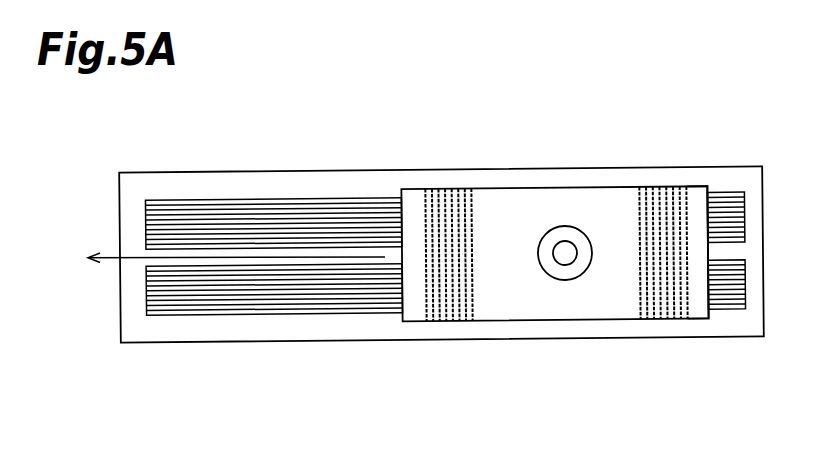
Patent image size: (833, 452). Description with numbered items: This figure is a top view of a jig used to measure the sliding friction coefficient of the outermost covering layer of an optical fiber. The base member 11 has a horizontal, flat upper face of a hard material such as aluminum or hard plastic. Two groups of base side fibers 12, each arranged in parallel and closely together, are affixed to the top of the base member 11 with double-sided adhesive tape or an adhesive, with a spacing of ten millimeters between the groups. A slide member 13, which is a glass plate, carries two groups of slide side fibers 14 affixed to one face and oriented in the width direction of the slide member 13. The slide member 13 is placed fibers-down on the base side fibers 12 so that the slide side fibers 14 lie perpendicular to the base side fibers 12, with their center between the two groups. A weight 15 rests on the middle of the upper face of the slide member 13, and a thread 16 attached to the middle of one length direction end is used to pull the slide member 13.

The base member 11 is at (533, 178).
The base side fiber 12 is at (305, 208).
The slide member 13 is at (697, 193).
The slide side fiber 14 is at (448, 208).
The weight 15 is at (567, 274).
The thread 16 is at (117, 263).